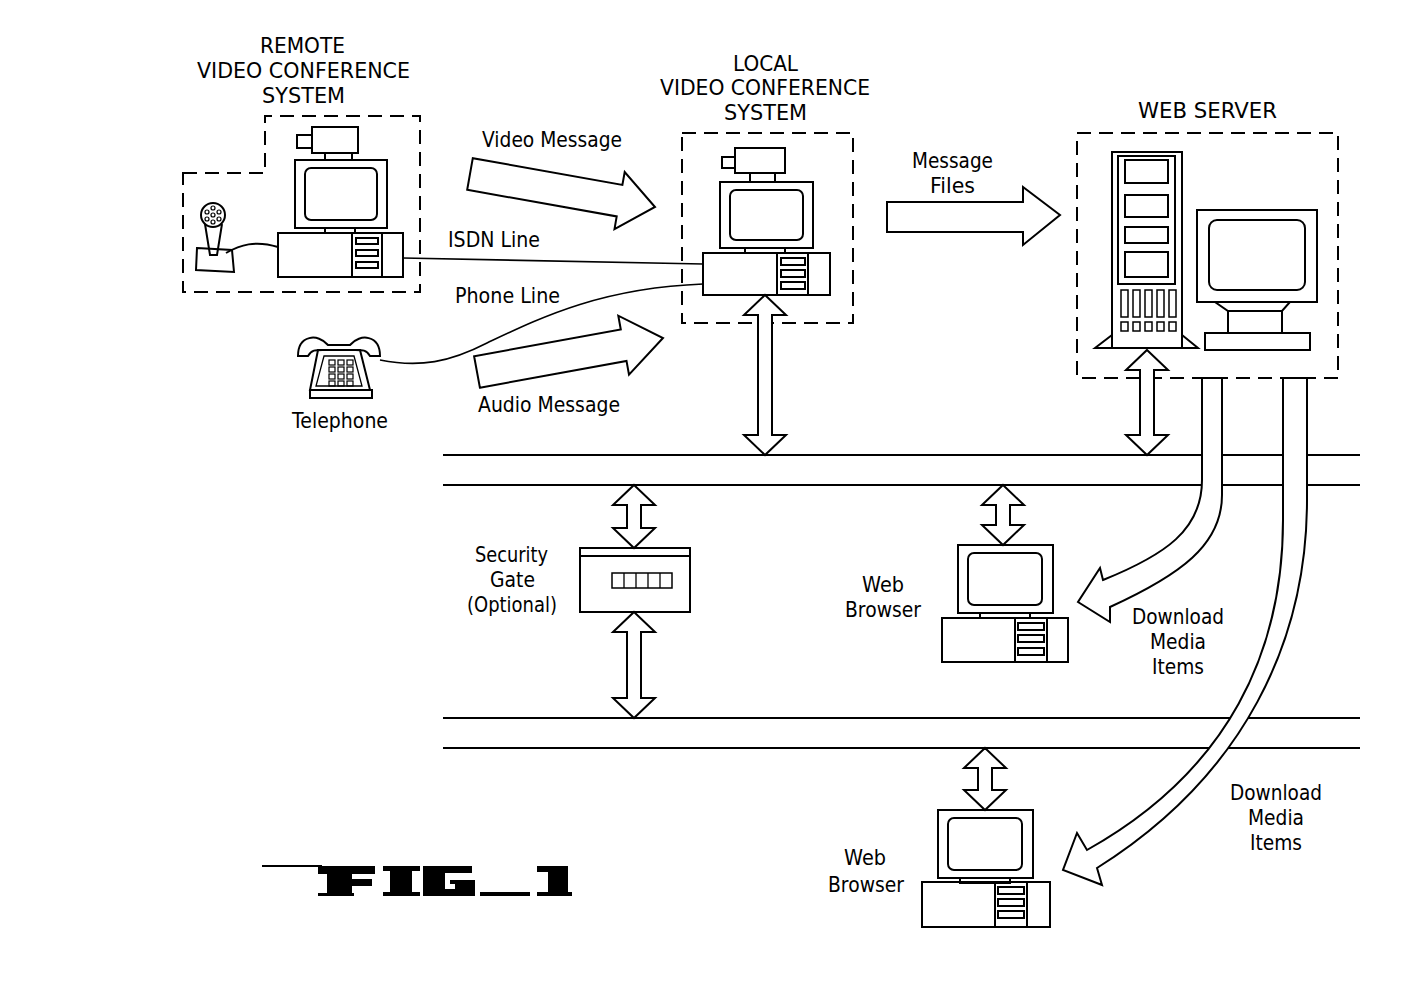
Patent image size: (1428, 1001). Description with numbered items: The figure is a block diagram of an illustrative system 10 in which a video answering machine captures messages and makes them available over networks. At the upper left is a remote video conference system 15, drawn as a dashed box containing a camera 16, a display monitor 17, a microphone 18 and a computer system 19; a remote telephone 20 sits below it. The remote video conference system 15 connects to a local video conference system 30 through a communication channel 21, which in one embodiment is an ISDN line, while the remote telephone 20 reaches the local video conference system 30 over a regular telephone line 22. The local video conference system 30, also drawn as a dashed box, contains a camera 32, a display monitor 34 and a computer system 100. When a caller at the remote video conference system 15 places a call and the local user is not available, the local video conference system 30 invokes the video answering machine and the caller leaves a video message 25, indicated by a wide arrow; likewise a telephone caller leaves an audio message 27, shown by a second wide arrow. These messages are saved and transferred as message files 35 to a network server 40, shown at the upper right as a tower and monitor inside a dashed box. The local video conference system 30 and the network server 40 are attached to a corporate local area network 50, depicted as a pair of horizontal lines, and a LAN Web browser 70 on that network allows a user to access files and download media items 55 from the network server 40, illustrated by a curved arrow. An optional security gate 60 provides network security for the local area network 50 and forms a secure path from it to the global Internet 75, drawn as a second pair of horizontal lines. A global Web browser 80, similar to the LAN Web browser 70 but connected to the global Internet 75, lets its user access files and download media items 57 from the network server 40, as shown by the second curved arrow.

The system 10 is at (1333, 79).
The remote video conference system 15 is at (258, 183).
The camera 16 is at (348, 137).
The display monitor 17 is at (367, 178).
The microphone 18 is at (208, 263).
The computer system 19 is at (307, 265).
The remote telephone 20 is at (312, 364).
The communication channel 21 is at (557, 257).
The telephone line 22 is at (634, 292).
The video message 25 is at (608, 180).
The audio message 27 is at (620, 367).
The local video conference system 30 is at (840, 178).
The camera 32 is at (788, 150).
The display monitor 34 is at (807, 228).
The message files 35 is at (1003, 200).
The network server 40 is at (1317, 180).
The local area network 50 is at (623, 467).
The media items 55 is at (1200, 562).
The media items 57 is at (1168, 832).
The security gate 60 is at (693, 573).
The LAN Web browser 70 is at (957, 560).
The global Internet 75 is at (725, 728).
The global Web browser 80 is at (937, 830).
The computer system 100 is at (822, 278).